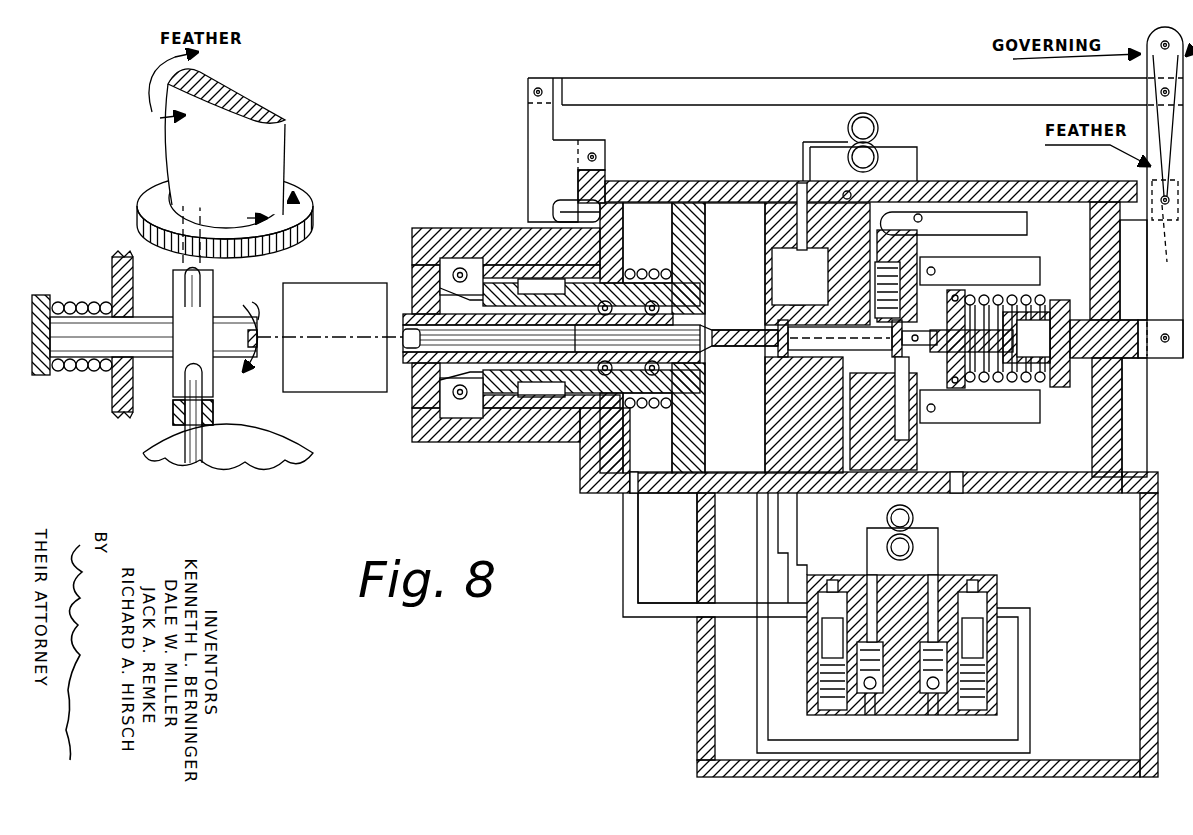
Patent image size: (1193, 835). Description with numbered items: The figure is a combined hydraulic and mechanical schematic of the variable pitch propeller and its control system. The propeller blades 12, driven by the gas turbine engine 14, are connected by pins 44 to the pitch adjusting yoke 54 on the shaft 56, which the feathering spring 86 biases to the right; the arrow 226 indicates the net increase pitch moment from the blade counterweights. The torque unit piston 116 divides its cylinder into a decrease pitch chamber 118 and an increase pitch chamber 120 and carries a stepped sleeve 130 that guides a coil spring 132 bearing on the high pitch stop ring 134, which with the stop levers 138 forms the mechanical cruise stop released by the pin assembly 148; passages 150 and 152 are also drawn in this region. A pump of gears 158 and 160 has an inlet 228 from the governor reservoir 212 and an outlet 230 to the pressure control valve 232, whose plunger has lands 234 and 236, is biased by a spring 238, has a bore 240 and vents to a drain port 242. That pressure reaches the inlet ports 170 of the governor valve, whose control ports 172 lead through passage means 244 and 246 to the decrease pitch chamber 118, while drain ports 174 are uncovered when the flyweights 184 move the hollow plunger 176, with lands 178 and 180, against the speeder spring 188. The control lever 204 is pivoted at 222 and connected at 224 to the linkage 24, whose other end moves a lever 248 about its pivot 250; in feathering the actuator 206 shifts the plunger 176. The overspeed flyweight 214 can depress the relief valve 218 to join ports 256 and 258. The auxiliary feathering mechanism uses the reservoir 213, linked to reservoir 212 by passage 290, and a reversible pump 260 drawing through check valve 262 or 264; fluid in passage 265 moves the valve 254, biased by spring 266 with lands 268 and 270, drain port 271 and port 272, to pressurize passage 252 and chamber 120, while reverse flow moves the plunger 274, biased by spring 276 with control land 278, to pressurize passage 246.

The propeller blades 12 is at (281, 126).
The gas turbine engine 14 is at (345, 283).
The control linkage 24 is at (768, 78).
The pins 44 is at (200, 283).
The pitch adjusting yoke 54 is at (170, 400).
The shaft 56 is at (155, 317).
The feathering spring 86 is at (76, 300).
The torque unit piston 116 is at (672, 493).
The decrease pitch chamber 118 is at (657, 203).
The increase pitch chamber 120 is at (728, 203).
The sleeve 130 is at (648, 406).
The coil spring 132 is at (647, 243).
The high pitch stop ring 134 is at (545, 408).
The stop levers 138 is at (470, 258).
The pin assembly 148 is at (558, 205).
The passage 150 is at (620, 493).
The passage 152 is at (757, 473).
The pump gear 158 is at (878, 128).
The pump gear 160 is at (878, 157).
The inlet ports of governor valve 170 is at (770, 300).
The control ports of governor valve 172 is at (734, 400).
The drain ports 174 is at (915, 445).
The valve plunger 176 is at (1045, 298).
The land 178 is at (780, 350).
The land 180 is at (880, 357).
The governor flyweights 184 is at (1030, 258).
The speeder spring 188 is at (1050, 382).
The control lever 204 is at (1168, 360).
The actuator 206 is at (1010, 380).
The governor reservoir 212 is at (1105, 203).
The feathering pump reservoir 213 is at (1140, 493).
The overspeed governor flyweight 214 is at (1000, 212).
The relief valve 218 is at (905, 235).
The pivot 222 is at (1163, 222).
The connection 224 is at (1162, 92).
The arrow 226 is at (267, 217).
The pump inlet 228 is at (880, 148).
The pump outlet 230 is at (806, 142).
The pressure control valve 232 is at (778, 256).
The land 234 is at (775, 252).
The land 236 is at (832, 245).
The spring 238 is at (790, 296).
The bore 240 is at (772, 265).
The drain port 242 is at (885, 322).
The passage means 244 is at (770, 426).
The passage means 246 is at (623, 580).
The lever 248 is at (528, 133).
The intermediate pivot 250 is at (594, 152).
The passage 252 is at (760, 562).
The valve 254 is at (990, 580).
The port 256 is at (843, 195).
The port 258 is at (938, 271).
The gear pump 260 is at (914, 518).
The check valve 262 is at (868, 715).
The check valve 264 is at (935, 715).
The passage 265 is at (940, 553).
The spring 266 is at (1000, 690).
The land 268 is at (990, 592).
The land 270 is at (987, 645).
The drain port 271 is at (987, 608).
The port 272 is at (987, 598).
The plunger 274 is at (826, 630).
The spring 276 is at (808, 718).
The control land 278 is at (834, 610).
The passage 290 is at (960, 480).